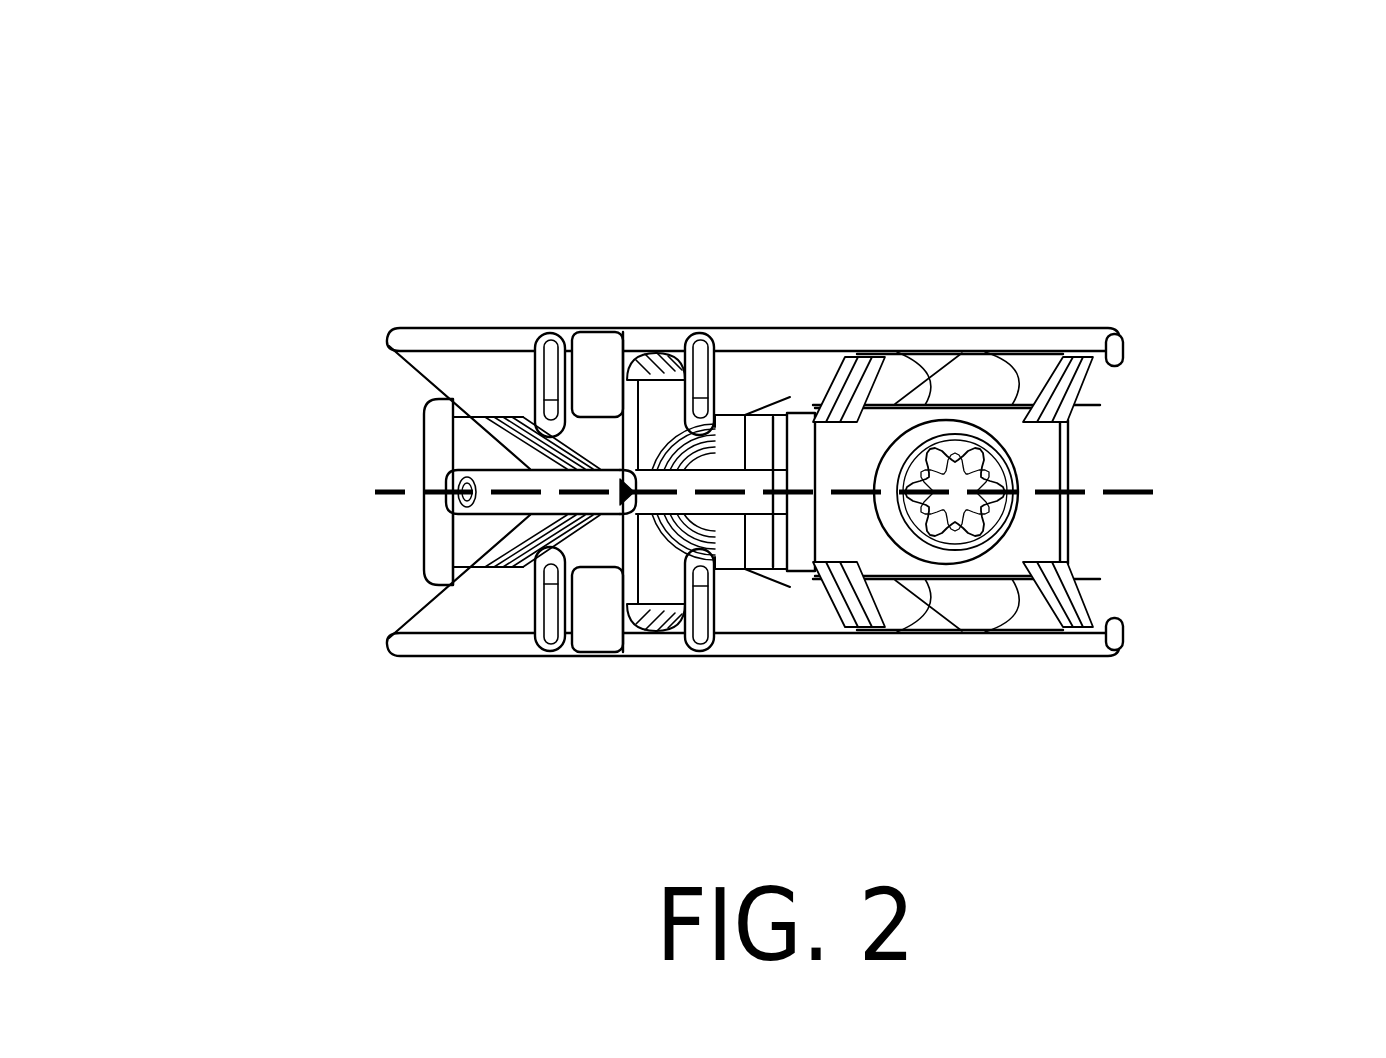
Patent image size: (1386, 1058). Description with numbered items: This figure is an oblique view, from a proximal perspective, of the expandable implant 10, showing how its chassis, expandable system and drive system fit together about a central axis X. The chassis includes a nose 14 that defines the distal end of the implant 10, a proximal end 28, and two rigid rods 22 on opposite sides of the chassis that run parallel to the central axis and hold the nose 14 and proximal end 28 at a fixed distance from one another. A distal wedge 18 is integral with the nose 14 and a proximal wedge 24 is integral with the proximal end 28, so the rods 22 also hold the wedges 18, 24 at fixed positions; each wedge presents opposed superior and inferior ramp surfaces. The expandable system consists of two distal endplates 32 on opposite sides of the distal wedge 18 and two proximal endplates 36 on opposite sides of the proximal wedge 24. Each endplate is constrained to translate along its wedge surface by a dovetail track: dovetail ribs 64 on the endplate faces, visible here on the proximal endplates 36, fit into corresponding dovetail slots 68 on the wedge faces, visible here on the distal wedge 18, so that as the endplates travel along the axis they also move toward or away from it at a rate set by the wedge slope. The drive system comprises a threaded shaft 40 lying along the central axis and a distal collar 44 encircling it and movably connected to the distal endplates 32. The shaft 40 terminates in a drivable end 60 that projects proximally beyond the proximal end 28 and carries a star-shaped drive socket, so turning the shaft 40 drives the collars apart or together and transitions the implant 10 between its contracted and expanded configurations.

The implant 10 is at (1212, 134).
The nose 14 is at (422, 423).
The distal wedge 18 is at (463, 577).
The rods 22 is at (622, 512).
The proximal wedge 24 is at (772, 552).
The proximal end 28 is at (1067, 547).
The distal endplates 32 is at (418, 329).
The proximal endplates 36 is at (912, 328).
The shaft 40 is at (678, 430).
The distal collar 44 is at (648, 373).
The drivable end 60 is at (1008, 460).
The dovetail ribs 64 is at (893, 372).
The dovetail slots 68 is at (525, 420).